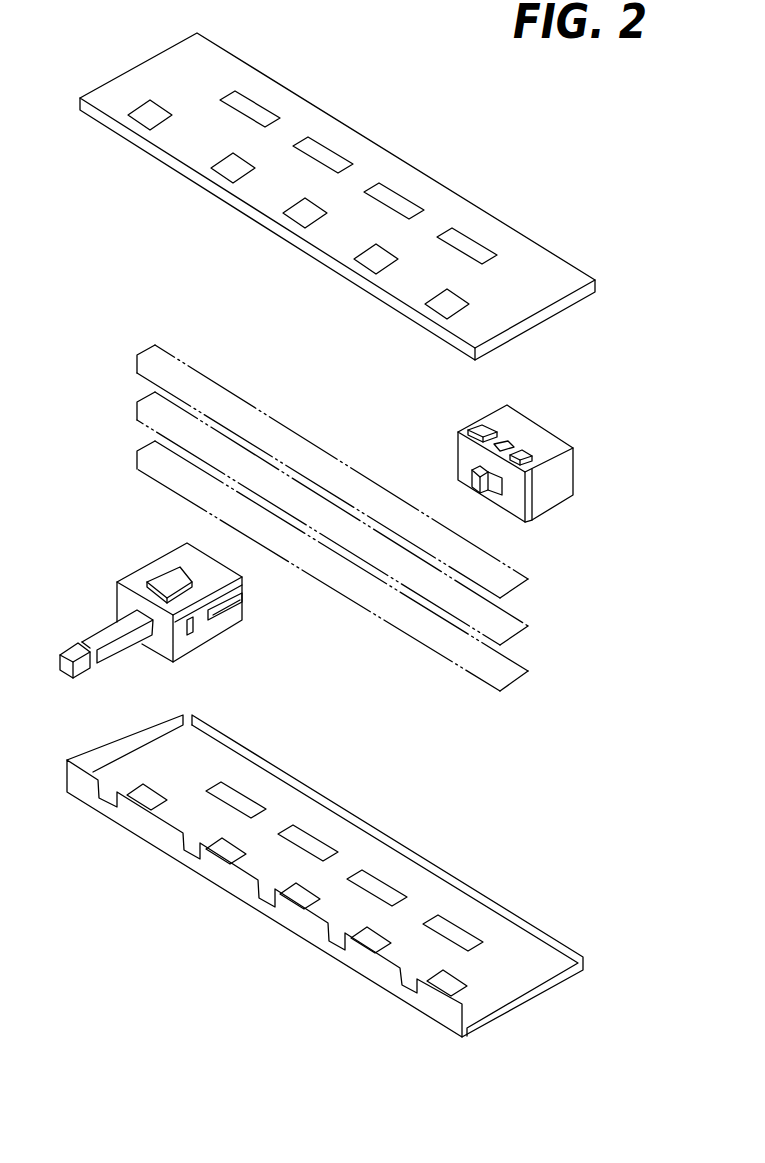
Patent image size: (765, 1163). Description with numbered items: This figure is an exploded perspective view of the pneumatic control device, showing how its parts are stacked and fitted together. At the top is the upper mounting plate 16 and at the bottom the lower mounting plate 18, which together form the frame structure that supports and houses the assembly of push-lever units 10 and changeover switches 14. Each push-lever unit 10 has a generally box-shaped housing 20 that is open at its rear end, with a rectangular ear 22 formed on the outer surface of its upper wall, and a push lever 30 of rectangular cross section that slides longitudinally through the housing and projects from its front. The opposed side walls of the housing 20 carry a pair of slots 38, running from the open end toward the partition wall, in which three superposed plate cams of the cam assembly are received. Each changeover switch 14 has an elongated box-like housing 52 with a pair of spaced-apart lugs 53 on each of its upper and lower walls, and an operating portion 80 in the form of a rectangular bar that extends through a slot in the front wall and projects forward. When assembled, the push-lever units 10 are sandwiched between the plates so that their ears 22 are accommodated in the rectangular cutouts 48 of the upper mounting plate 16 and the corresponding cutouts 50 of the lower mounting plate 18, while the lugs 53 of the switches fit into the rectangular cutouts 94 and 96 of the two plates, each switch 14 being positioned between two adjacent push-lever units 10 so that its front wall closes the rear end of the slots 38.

The push-lever unit 10 is at (179, 596).
The changeover switch 14 is at (523, 462).
The upper mounting plate 16 is at (230, 57).
The lower mounting plate 18 is at (535, 948).
The housing 20 is at (133, 578).
The upper rectangular ear 22 is at (165, 573).
The push lever 30 is at (93, 637).
The slot 38 is at (241, 595).
The rectangular cutout 48 is at (297, 217).
The rectangular cutout 50 is at (143, 797).
The housing 52 is at (562, 487).
The lug 53 is at (485, 430).
The operating portion 80 is at (480, 468).
The rectangular cutout 94 is at (328, 157).
The rectangular cutout 96 is at (312, 838).